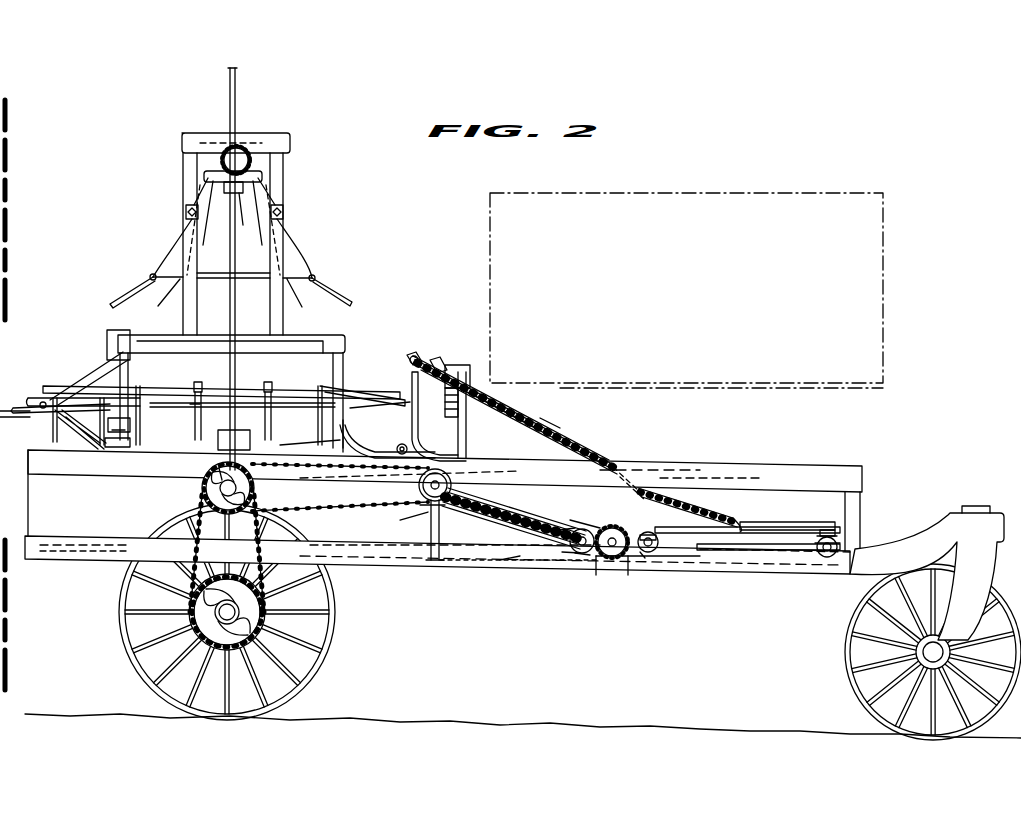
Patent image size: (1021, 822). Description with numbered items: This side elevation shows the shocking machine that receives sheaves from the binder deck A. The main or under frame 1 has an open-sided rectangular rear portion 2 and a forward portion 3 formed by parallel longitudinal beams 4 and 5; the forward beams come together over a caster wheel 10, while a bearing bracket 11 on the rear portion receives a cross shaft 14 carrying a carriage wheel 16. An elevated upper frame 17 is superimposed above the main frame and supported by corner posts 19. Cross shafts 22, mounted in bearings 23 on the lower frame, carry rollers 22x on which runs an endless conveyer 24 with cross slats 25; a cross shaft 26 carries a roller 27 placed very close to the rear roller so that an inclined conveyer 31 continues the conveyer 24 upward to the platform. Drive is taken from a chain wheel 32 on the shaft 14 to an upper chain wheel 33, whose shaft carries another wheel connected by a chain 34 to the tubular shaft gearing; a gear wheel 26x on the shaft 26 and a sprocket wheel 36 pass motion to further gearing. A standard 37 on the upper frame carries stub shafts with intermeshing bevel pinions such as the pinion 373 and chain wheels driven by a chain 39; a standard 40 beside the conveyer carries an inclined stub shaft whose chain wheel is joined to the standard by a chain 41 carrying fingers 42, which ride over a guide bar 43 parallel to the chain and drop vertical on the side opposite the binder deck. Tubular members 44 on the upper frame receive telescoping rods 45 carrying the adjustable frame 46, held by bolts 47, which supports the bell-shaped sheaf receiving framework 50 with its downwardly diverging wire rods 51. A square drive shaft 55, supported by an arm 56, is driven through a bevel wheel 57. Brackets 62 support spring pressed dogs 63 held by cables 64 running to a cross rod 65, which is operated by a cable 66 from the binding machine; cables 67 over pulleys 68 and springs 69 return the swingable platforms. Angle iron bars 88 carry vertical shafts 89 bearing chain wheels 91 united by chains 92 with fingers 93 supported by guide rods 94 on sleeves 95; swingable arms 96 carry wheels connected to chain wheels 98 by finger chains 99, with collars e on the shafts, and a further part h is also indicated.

The main or under frame 1 is at (522, 576).
The rectangular rear portion 2 is at (445, 548).
The forward portion 3 is at (785, 578).
The longitudinally extending beam 4 is at (546, 578).
The longitudinally extending beam 5 is at (742, 588).
The caster wheel 10 is at (850, 686).
The bearing bracket 11 is at (330, 596).
The cross shaft 14 is at (180, 648).
The carriage wheel 16 is at (310, 680).
The elevated or upper frame 17 is at (662, 470).
The corner post 19 is at (855, 528).
The cross shaft 22 is at (825, 555).
The roller 22x is at (645, 532).
The bearing 23 is at (660, 548).
The endless conveyer 24 is at (770, 524).
The cross slat 25 is at (862, 560).
The cross shaft 26 is at (610, 560).
The gear wheel 26x is at (598, 560).
The roller 27 is at (625, 562).
The inclined conveyer 31 is at (583, 525).
The chain wheel 32 is at (200, 616).
The upper chain wheel 33 is at (258, 488).
The chain 34 is at (340, 499).
The sprocket wheel 36 is at (512, 540).
The standard 37 is at (468, 446).
The bevel pinion 373 is at (417, 372).
The chain 39 is at (514, 494).
The standard 40 is at (690, 542).
The chain 41 is at (556, 452).
The finger 42 is at (380, 415).
The guide bar 43 is at (566, 434).
The tubular member 44 is at (188, 246).
The telescoping rod 45 is at (188, 182).
The adjustable frame 46 is at (274, 140).
The adjustable bolt 47 is at (186, 212).
The sheaf receiving framework 50 is at (302, 262).
The wire rod 51 is at (206, 224).
The square drive shaft 55 is at (232, 318).
The arm 56 is at (243, 196).
The bevel wheel 57 is at (248, 152).
The bracket 62 is at (243, 432).
The spring pressed dog 63 is at (222, 430).
The cable 64 is at (410, 487).
The cross rod 65 is at (625, 478).
The cable 66 is at (442, 515).
The cable 67 is at (195, 410).
The pulley 68 is at (200, 392).
The spring 69 is at (150, 490).
The angle iron bar 88 is at (292, 345).
The vertical shaft 89 is at (356, 362).
The chain wheel 91 is at (115, 380).
The chain 92 is at (178, 402).
The finger 93 is at (375, 450).
The guide rod 94 is at (55, 396).
The sleeve 95 is at (208, 432).
The arm 96 is at (112, 385).
The chain wheel 98 is at (221, 388).
The chain 99 is at (62, 440).
The binder deck A is at (686, 290).
The collar e is at (126, 430).
The rod h is at (347, 436).